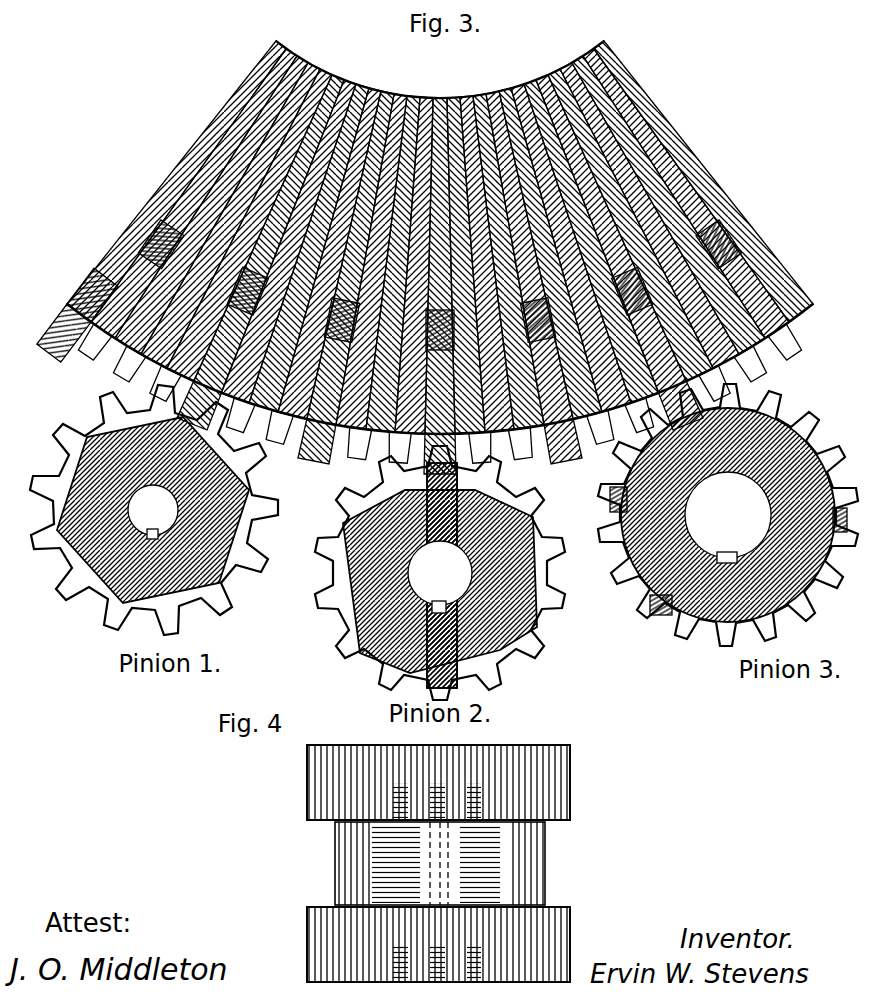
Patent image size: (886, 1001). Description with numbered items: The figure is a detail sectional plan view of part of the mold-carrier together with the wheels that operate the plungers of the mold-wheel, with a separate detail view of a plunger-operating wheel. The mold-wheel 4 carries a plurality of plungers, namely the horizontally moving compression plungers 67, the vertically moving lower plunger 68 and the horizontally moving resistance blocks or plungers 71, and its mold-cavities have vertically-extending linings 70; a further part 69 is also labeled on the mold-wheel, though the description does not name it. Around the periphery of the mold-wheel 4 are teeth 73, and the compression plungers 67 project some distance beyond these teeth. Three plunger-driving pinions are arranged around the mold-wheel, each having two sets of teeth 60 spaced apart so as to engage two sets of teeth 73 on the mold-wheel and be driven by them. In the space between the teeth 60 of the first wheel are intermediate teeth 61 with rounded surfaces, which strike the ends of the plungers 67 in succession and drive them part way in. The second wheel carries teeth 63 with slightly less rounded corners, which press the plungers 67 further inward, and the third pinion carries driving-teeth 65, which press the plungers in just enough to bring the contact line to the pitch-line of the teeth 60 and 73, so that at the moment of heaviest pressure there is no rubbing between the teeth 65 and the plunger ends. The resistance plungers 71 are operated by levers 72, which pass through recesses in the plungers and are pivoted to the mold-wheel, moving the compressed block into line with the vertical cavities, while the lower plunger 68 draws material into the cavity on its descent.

In FIG. 3, the mold-wheel 4 is at (424, 268).
In FIG. 3, the teeth 60 is at (80, 410).
In FIG. 4, the teeth 60 is at (307, 784).
In FIG. 3, the intermediate teeth 61 is at (58, 572).
In FIG. 3, the teeth 63 is at (330, 622).
In FIG. 4, the teeth 63 is at (340, 870).
In FIG. 3, the driving-teeth 65 is at (657, 612).
In FIG. 3, the plungers 67 is at (86, 345).
In FIG. 3, the lower plunger 68 is at (198, 282).
In FIG. 3, the key block 69 is at (161, 244).
In FIG. 3, the vertically-extending linings 70 is at (156, 216).
In FIG. 3, the resistance blocks or plungers 71 is at (192, 176).
In FIG. 3, the lever 72 is at (222, 114).
In FIG. 3, the teeth 73 is at (132, 364).